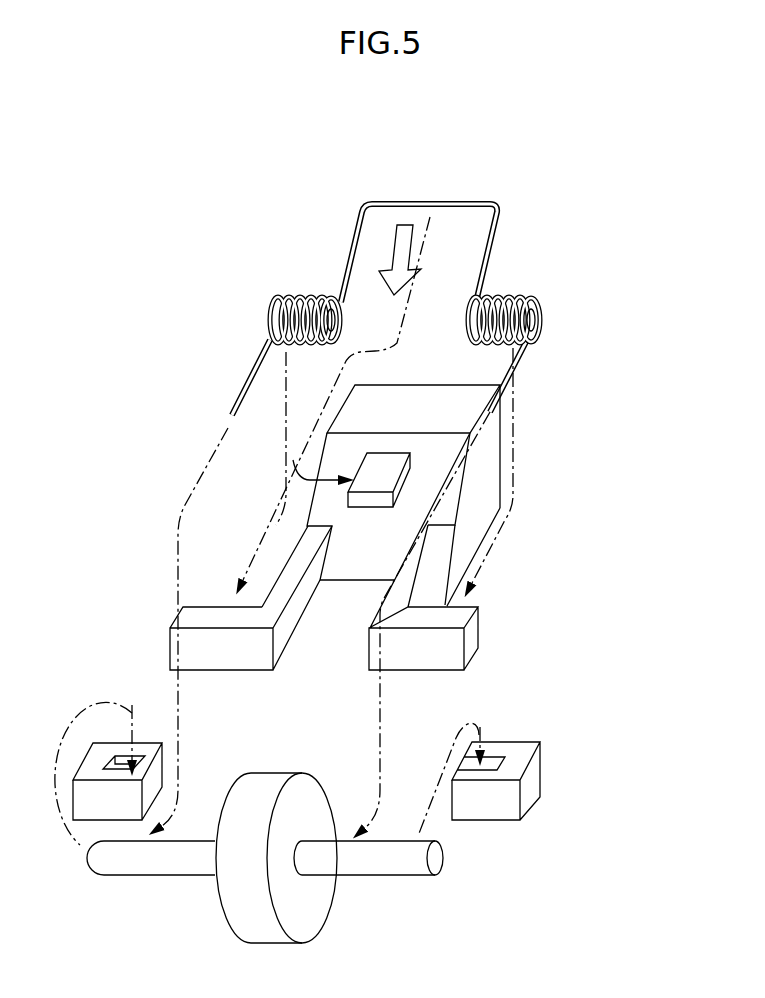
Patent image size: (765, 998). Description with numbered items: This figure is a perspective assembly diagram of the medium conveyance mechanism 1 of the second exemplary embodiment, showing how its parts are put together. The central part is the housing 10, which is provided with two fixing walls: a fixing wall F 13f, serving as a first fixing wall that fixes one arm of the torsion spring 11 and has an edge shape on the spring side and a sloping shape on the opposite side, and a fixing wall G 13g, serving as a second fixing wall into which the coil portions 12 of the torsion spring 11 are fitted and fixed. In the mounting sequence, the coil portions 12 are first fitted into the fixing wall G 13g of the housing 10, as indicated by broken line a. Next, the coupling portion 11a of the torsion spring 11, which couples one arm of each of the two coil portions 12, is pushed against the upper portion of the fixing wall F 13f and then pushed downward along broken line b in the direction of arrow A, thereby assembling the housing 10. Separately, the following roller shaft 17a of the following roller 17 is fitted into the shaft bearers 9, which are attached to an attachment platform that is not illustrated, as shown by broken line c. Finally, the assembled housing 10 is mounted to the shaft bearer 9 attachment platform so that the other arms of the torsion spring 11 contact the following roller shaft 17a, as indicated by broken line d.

The medium conveyance mechanism 1 is at (128, 645).
The shaft bearers 9 is at (513, 755).
The housing 10 is at (488, 476).
The torsion spring 11 is at (550, 356).
The coupling portion 11a is at (445, 203).
The coil portions 12 is at (518, 298).
The fixing wall F 13f is at (380, 462).
The fixing wall G 13g is at (460, 616).
The following roller 17 is at (308, 905).
The following roller shaft 17a is at (132, 856).